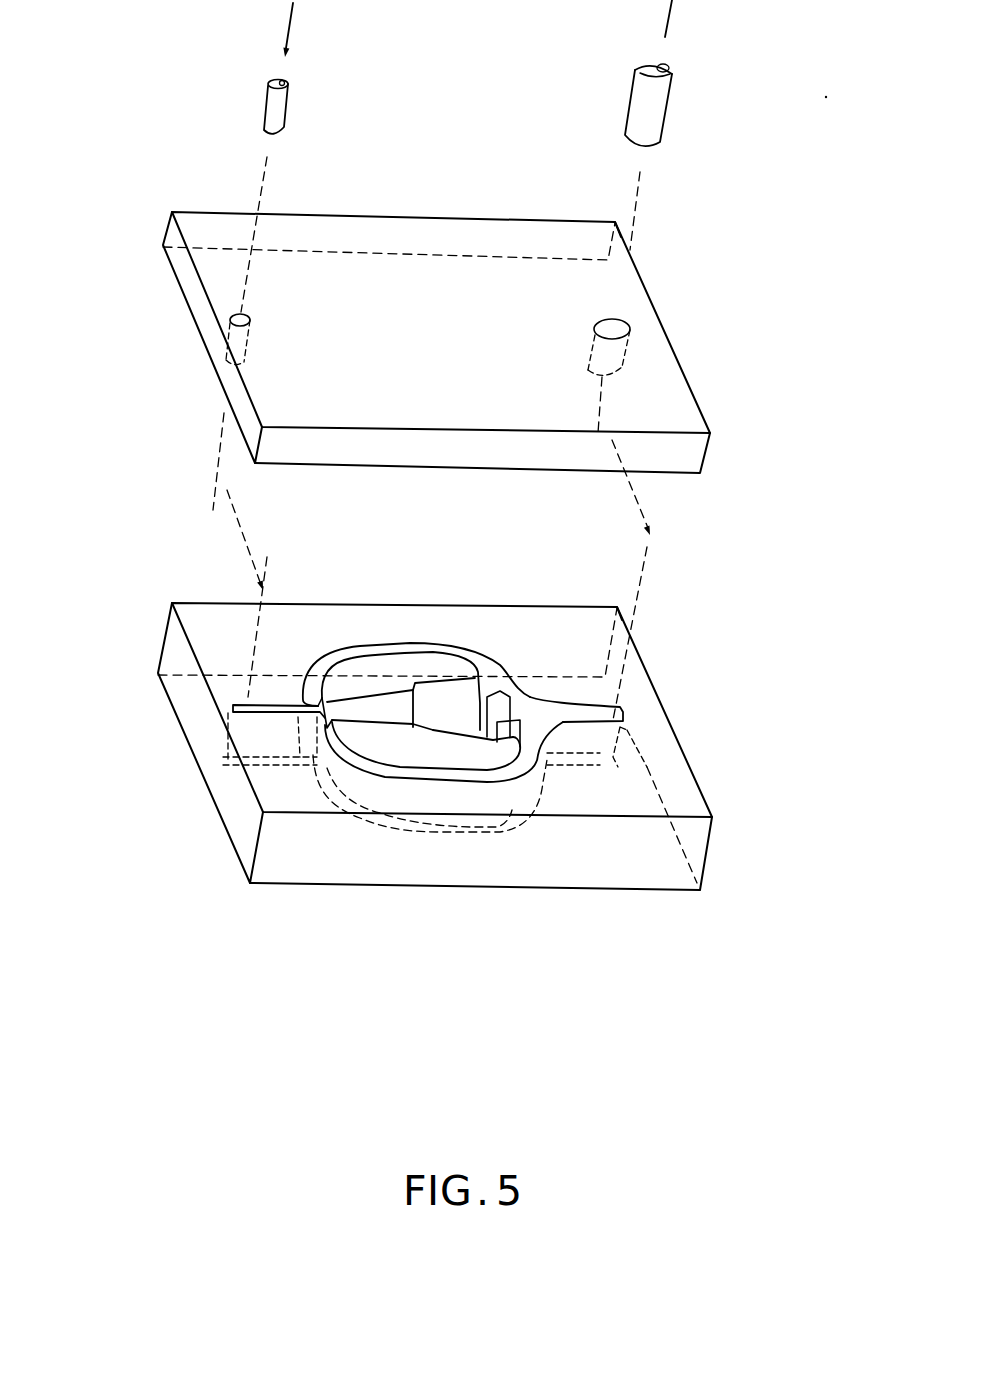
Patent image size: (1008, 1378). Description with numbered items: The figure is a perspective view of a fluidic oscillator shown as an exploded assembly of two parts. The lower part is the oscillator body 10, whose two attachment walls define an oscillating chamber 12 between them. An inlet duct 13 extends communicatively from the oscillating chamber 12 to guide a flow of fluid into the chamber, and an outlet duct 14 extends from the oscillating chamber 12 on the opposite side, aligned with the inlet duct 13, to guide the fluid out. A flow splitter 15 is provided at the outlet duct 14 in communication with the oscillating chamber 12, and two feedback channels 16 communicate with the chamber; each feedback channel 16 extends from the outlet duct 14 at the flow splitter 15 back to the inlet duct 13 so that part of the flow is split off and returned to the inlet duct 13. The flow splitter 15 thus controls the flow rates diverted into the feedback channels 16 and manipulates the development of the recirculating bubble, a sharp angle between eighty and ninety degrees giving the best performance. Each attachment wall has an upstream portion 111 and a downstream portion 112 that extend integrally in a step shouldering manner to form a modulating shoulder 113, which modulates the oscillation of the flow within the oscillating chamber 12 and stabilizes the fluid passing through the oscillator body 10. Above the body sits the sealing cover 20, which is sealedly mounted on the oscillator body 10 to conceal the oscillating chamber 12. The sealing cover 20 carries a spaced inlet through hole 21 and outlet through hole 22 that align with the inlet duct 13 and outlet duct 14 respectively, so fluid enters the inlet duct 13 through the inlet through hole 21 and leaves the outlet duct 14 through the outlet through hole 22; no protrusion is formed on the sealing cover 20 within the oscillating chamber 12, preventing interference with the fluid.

The oscillator body 10 is at (826, 577).
The sealing cover 20 is at (380, 230).
The inlet through hole 21 is at (237, 307).
The outlet through hole 22 is at (628, 316).
The oscillating chamber 12 is at (460, 698).
The inlet duct 13 is at (228, 696).
The outlet duct 14 is at (627, 704).
The flow splitter 15 is at (497, 697).
The feedback channels 16 is at (449, 635).
The upstream portion 111 is at (340, 684).
The downstream portion 112 is at (428, 670).
The modulating shoulder 113 is at (400, 682).